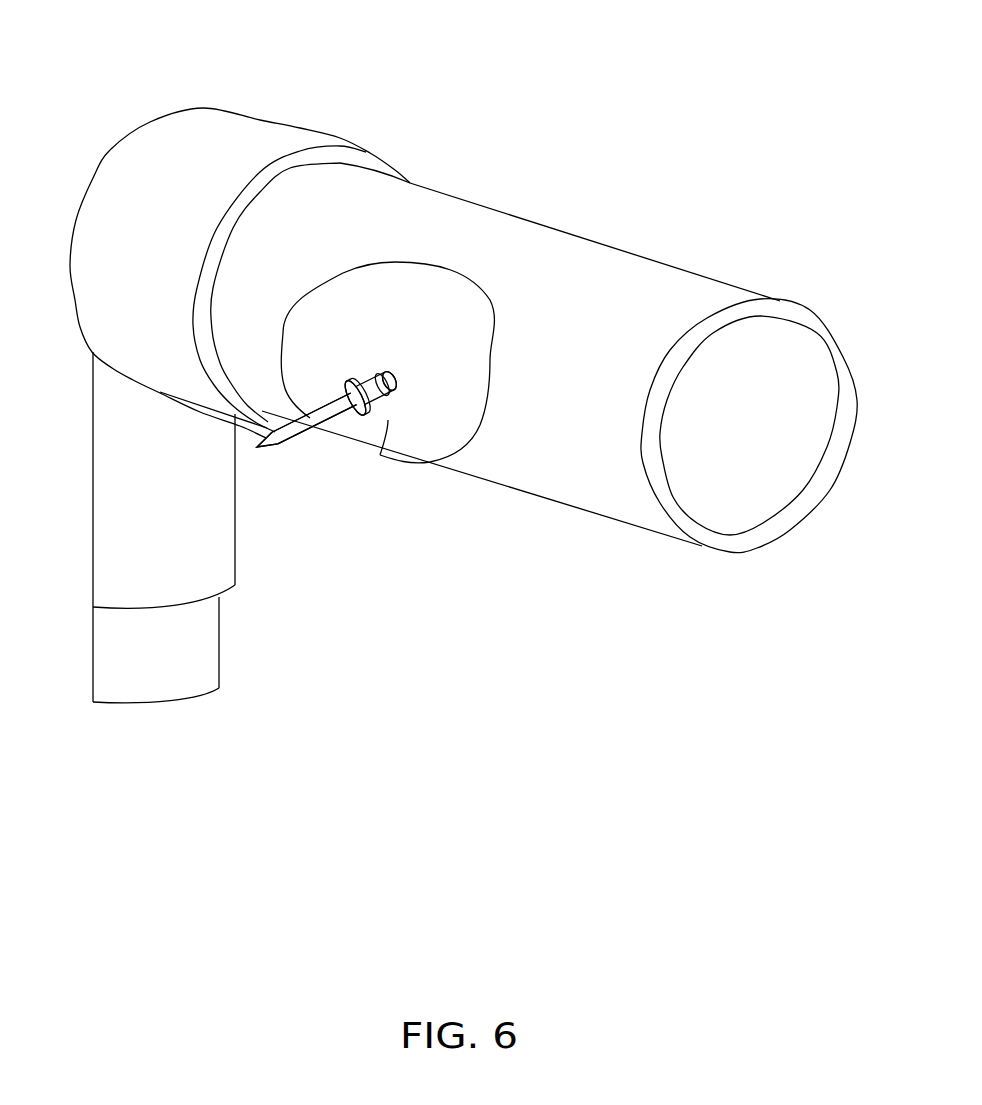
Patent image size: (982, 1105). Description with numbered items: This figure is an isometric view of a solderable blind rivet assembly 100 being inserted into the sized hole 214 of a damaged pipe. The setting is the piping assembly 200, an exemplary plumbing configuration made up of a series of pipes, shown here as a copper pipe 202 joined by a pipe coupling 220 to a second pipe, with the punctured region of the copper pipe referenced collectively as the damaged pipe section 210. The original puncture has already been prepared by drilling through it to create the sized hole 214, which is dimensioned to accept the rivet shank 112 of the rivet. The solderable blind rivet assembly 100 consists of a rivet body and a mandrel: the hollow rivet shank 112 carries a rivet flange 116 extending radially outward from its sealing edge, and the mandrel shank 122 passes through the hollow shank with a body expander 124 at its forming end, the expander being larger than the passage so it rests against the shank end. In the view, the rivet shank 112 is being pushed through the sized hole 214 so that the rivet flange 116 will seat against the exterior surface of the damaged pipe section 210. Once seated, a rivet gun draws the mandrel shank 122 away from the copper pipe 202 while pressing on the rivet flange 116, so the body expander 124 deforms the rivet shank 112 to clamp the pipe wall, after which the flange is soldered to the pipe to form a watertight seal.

The solderable blind rivet assembly 100 is at (315, 401).
The rivet shank 112 is at (367, 380).
The rivet flange 116 is at (350, 418).
The mandrel shank 122 is at (287, 443).
The body expander 124 is at (395, 380).
The piping assembly 200 is at (225, 80).
The copper pipe 202 is at (580, 478).
The damaged pipe section 210 is at (387, 298).
The sized hole 214 is at (388, 420).
The pipe coupling 220 is at (96, 309).